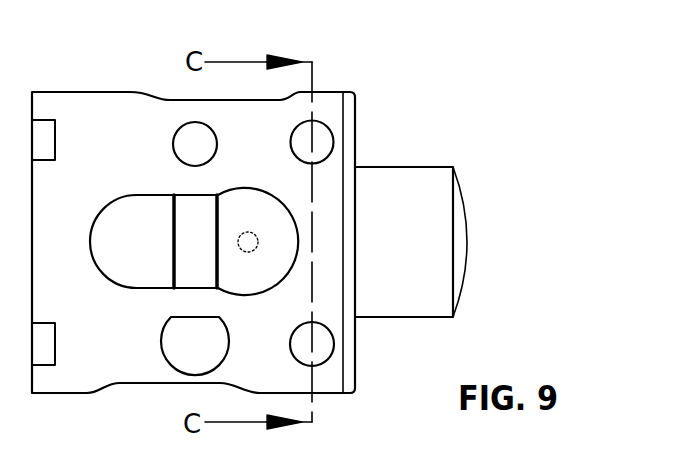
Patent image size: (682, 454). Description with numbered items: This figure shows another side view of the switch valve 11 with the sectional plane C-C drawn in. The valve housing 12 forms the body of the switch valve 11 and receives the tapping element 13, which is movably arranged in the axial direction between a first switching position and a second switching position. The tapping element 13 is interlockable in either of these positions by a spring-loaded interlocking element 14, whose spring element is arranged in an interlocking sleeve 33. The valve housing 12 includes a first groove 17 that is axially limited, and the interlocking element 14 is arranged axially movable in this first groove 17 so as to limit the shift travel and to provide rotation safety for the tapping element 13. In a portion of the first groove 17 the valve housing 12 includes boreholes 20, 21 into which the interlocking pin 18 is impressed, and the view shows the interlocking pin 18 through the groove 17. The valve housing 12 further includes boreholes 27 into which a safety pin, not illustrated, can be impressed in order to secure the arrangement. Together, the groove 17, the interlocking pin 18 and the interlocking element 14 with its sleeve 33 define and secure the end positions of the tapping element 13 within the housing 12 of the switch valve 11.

The switch valve 11 is at (522, 167).
The valve housing 12 is at (360, 137).
The tapping element 13 is at (469, 247).
The interlocking element 14 is at (300, 238).
The first groove 17 is at (157, 203).
The interlocking pin 18 is at (191, 240).
The borehole 20 is at (194, 146).
The borehole 21 is at (190, 323).
The boreholes 27 is at (321, 137).
The interlocking sleeve 33 is at (245, 218).